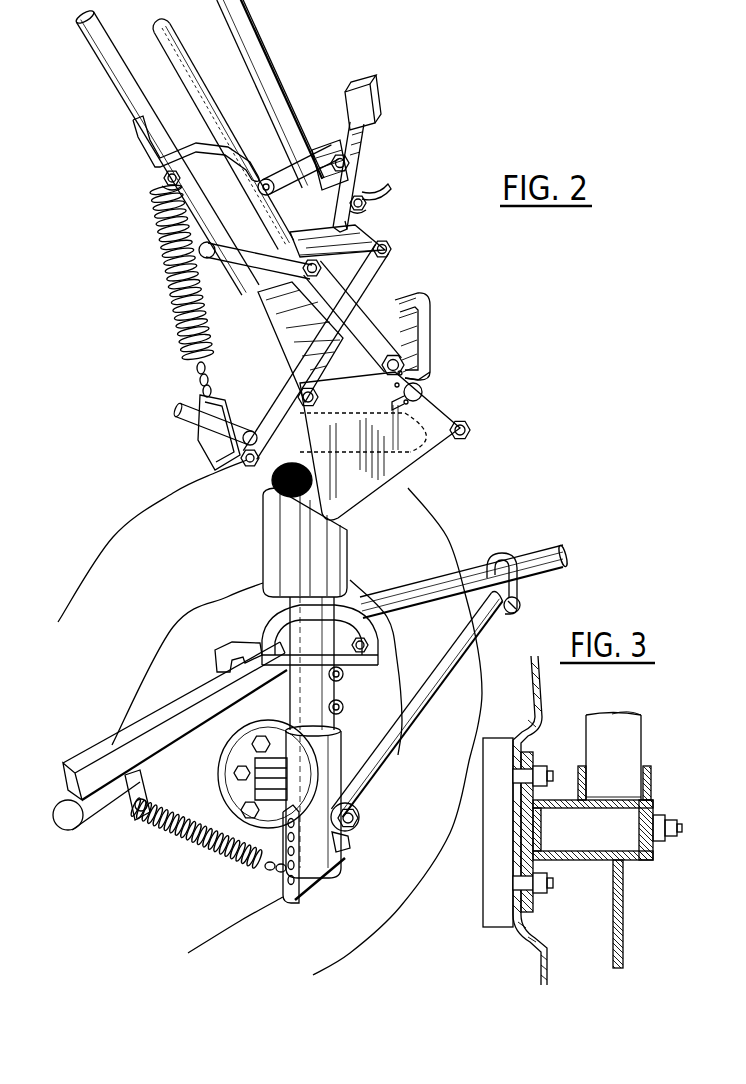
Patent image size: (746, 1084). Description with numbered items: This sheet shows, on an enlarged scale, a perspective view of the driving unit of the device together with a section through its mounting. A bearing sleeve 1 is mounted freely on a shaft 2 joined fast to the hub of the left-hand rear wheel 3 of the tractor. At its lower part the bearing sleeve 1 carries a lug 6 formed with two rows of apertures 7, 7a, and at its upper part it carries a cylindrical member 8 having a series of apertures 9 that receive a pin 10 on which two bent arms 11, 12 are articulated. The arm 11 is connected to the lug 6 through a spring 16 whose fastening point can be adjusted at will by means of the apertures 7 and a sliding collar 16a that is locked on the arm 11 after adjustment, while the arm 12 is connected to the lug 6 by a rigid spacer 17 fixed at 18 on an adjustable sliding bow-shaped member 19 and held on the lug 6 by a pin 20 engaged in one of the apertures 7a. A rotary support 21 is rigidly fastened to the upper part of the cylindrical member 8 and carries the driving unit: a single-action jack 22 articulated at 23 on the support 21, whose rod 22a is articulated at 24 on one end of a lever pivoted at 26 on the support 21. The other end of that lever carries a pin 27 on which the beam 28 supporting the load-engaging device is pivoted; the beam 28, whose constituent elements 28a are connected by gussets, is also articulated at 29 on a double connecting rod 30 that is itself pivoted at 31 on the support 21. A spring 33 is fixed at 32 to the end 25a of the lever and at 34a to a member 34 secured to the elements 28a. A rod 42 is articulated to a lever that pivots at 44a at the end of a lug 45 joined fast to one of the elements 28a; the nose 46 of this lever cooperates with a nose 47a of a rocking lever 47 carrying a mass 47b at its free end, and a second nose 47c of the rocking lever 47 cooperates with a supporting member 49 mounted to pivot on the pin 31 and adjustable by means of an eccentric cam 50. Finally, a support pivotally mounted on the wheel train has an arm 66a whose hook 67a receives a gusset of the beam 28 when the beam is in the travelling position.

In FIG. 2, the bearing sleeve 1 is at (313, 763).
In FIG. 3, the bearing sleeve 1 is at (651, 781).
In FIG. 3, the shaft 2 is at (590, 833).
In FIG. 2, the left-hand rear wheel 3 is at (373, 902).
In FIG. 3, the left-hand rear wheel 3 is at (540, 692).
In FIG. 2, the lug 6 is at (310, 863).
In FIG. 3, the lug 6 is at (623, 907).
In FIG. 2, the apertures 7 is at (290, 885).
In FIG. 2, the apertures 7a is at (336, 853).
In FIG. 2, the cylindrical member 8 is at (307, 703).
In FIG. 3, the cylindrical member 8 is at (623, 747).
In FIG. 2, the apertures 9 is at (343, 675).
In FIG. 2, the pin 10 is at (377, 643).
In FIG. 2, the arm 11 is at (90, 827).
In FIG. 2, the arm 12 is at (533, 560).
In FIG. 2, the spring 16 is at (203, 847).
In FIG. 2, the sliding collar 16a is at (131, 807).
In FIG. 2, the rigid spacer 17 is at (460, 657).
In FIG. 2, the fixing point 18 is at (520, 605).
In FIG. 2, the adjustable sliding bow-shaped member 19 is at (498, 556).
In FIG. 2, the pin 20 is at (343, 840).
In FIG. 2, the rotary support 21 is at (423, 400).
In FIG. 2, the single-action jack 22 is at (407, 440).
In FIG. 2, the jack rod 22a is at (260, 467).
In FIG. 2, the articulation point 23 is at (468, 427).
In FIG. 2, the articulation point 24 is at (250, 463).
In FIG. 2, the lever end 25a is at (203, 395).
In FIG. 2, the pivot 26 is at (320, 410).
In FIG. 2, the pin 27 is at (392, 250).
In FIG. 2, the beam 28 is at (267, 33).
In FIG. 2, the constituent elements 28a is at (107, 50).
In FIG. 2, the articulation point 29 is at (323, 272).
In FIG. 2, the double connecting rod 30 is at (257, 287).
In FIG. 2, the pin 31 is at (402, 378).
In FIG. 2, the fixing point 32 is at (192, 425).
In FIG. 2, the spring 33 is at (158, 235).
In FIG. 2, the member 34 is at (157, 147).
In FIG. 2, the fixing point 34a is at (164, 178).
In FIG. 2, the rod 42 is at (207, 87).
In FIG. 2, the pivot 44a is at (348, 163).
In FIG. 2, the lug 45 is at (342, 210).
In FIG. 2, the nose 46 is at (355, 195).
In FIG. 2, the rocking lever 47 is at (360, 148).
In FIG. 2, the nose 47a is at (346, 223).
In FIG. 2, the mass 47b is at (362, 100).
In FIG. 2, the second nose 47c is at (388, 186).
In FIG. 2, the supporting member 49 is at (420, 312).
In FIG. 2, the eccentric cam 50 is at (395, 362).
In FIG. 2, the arm 66a is at (167, 713).
In FIG. 2, the hook 67a is at (223, 652).